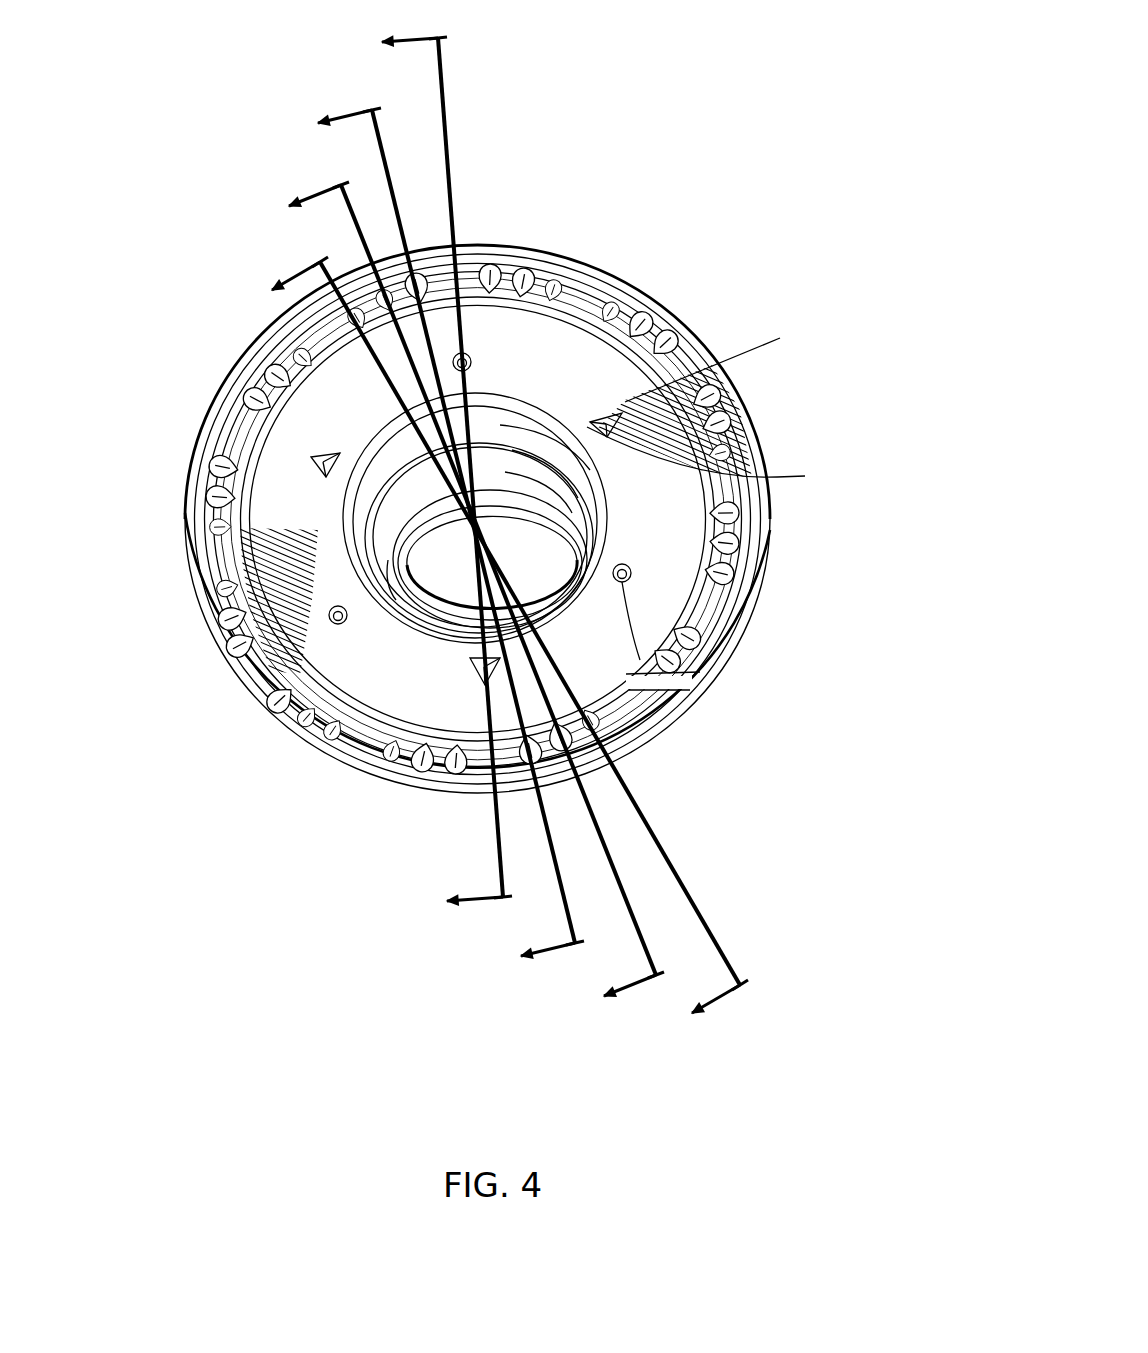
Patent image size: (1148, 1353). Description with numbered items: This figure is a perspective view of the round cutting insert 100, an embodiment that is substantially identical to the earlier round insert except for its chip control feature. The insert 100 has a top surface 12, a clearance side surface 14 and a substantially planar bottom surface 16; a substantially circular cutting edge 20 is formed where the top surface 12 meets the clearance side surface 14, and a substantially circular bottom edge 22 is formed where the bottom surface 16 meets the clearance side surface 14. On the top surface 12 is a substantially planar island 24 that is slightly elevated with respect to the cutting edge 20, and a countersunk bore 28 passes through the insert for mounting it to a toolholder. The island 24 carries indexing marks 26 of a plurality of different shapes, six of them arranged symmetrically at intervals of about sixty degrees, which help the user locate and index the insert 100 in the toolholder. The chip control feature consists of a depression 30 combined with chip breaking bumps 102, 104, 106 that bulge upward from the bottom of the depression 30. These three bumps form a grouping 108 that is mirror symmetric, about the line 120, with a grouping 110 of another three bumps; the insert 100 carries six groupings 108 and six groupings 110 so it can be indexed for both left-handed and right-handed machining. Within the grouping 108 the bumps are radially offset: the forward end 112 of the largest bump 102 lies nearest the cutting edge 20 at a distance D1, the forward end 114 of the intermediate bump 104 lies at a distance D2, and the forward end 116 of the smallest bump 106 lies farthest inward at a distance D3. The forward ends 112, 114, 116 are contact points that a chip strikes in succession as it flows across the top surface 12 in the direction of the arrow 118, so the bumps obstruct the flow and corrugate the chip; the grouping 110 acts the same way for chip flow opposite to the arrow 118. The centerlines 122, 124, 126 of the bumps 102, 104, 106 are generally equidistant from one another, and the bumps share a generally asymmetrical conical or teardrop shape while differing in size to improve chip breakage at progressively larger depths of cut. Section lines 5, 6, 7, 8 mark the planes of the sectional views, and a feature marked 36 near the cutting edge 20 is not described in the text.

The round cutting insert 100 is at (686, 70).
The arrow 118 is at (478, 197).
The top surface 12 is at (529, 465).
The chip breaking bump 106 is at (622, 305).
The chip breaking bump 104 is at (616, 318).
The chip breaking bump 102 is at (727, 310).
The grouping of bumps 108 is at (725, 262).
The forward end of bump 116 is at (612, 316).
The forward end of bump 114 is at (655, 340).
The forward end of bump 112 is at (683, 342).
The line of symmetry 120 is at (775, 345).
The grouping of bumps 110 is at (740, 370).
The centerline of bump 126 is at (594, 326).
The centerline of bump 124 is at (612, 340).
The centerline of bump 122 is at (640, 408).
The island 24 is at (286, 447).
The depression 30 is at (228, 432).
The countersunk bore 28 is at (397, 548).
The indexing marks 26 is at (640, 736).
The outer ring surface 36 is at (752, 492).
The distance D3 is at (727, 528).
The distance D2 is at (727, 556).
The distance D1 is at (722, 594).
The cutting edge 20 is at (771, 527).
The clearance side surface 14 is at (746, 640).
The bottom edge 22 is at (752, 693).
The bottom surface 16 is at (708, 768).
The section line 5- 5 is at (447, 474).
The section line 6- 6 is at (451, 529).
The section line 7- 7 is at (479, 582).
The section line 8- 8 is at (513, 625).